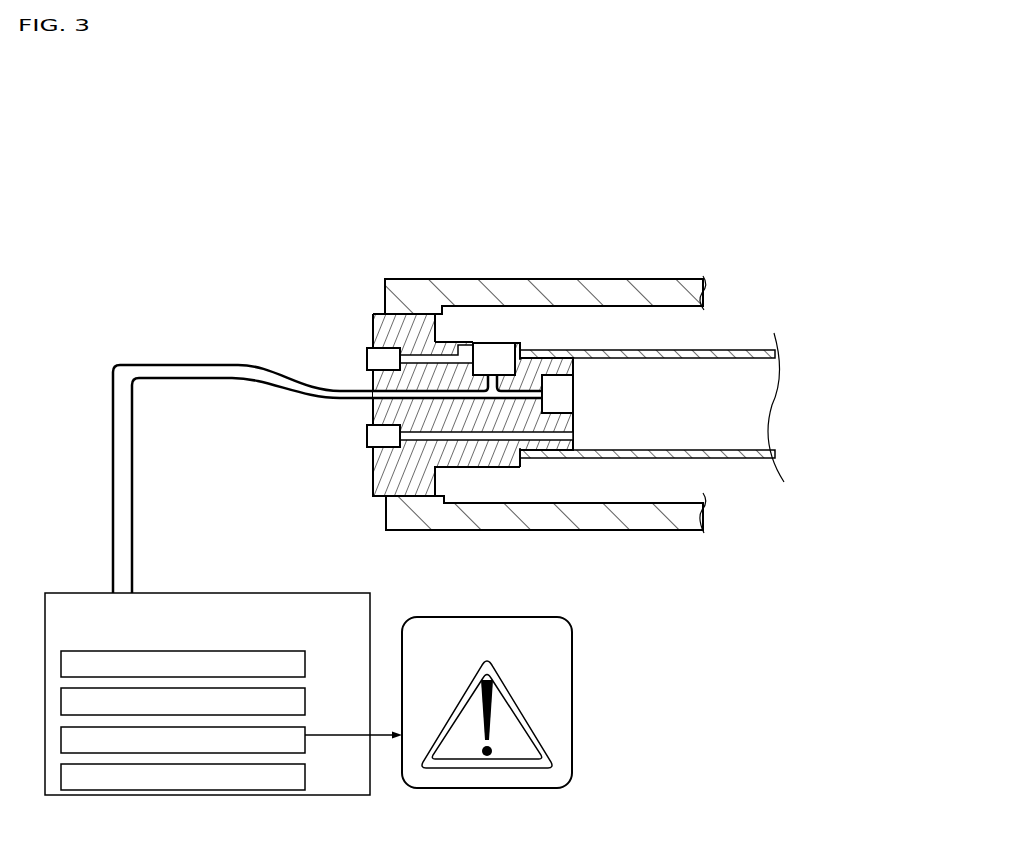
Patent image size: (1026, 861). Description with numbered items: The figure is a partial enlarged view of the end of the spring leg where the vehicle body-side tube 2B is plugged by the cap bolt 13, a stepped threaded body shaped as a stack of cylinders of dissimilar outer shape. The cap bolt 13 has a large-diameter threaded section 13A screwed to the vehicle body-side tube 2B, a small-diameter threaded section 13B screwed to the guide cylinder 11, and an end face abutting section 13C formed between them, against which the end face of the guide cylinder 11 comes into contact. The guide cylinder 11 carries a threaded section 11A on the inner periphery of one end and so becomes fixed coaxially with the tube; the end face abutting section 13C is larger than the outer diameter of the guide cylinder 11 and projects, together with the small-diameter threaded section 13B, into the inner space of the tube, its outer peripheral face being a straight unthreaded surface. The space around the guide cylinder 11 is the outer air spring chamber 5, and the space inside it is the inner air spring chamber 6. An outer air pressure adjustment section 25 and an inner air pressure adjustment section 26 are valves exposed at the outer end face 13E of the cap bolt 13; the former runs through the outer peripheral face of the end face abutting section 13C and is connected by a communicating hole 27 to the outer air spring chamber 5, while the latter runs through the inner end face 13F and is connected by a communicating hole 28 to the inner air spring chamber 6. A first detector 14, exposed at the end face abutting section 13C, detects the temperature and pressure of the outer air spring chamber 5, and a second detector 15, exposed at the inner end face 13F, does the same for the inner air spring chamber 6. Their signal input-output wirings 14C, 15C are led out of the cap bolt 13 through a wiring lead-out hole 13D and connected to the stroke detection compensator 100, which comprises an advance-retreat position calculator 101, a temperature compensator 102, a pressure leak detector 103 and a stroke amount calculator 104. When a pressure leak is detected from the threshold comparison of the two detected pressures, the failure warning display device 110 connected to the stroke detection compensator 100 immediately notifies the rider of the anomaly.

The vehicle body-side tube 2B is at (665, 288).
The outer air spring chamber 5 is at (570, 325).
The inner air spring chamber 6 is at (717, 387).
The guide cylinder 11 is at (668, 350).
The threaded section 11A is at (576, 368).
The cap bolt 13 is at (372, 313).
The large-diameter threaded section 13A is at (407, 312).
The small-diameter threaded section 13B is at (541, 358).
The end face abutting section 13C is at (470, 345).
The wiring lead-out hole 13D is at (373, 398).
The outer end face 13E is at (373, 485).
The inner end face 13F is at (573, 418).
The first detector 14 is at (490, 343).
The signal input-output wiring 14C is at (180, 365).
The second detector 15 is at (563, 390).
The signal input-output wiring 15C is at (180, 381).
The outer air pressure adjustment section 25 is at (377, 360).
The inner air pressure adjustment section 26 is at (367, 437).
The communicating hole 27 is at (413, 353).
The communicating hole 28 is at (416, 440).
The stroke detection compensator 100 is at (207, 694).
The advance-retreat position calculator 101 is at (296, 651).
The temperature compensator 102 is at (296, 688).
The pressure leak detector 103 is at (296, 727).
The stroke amount calculator 104 is at (296, 764).
The failure warning display device 110 is at (460, 617).